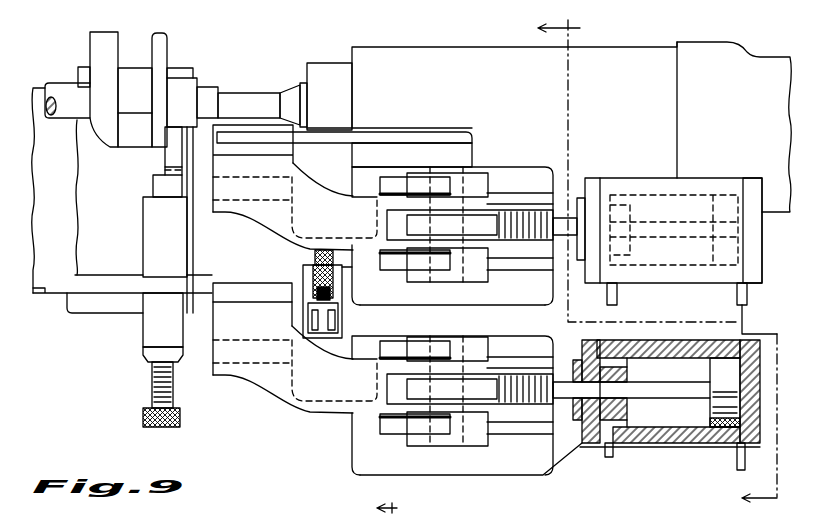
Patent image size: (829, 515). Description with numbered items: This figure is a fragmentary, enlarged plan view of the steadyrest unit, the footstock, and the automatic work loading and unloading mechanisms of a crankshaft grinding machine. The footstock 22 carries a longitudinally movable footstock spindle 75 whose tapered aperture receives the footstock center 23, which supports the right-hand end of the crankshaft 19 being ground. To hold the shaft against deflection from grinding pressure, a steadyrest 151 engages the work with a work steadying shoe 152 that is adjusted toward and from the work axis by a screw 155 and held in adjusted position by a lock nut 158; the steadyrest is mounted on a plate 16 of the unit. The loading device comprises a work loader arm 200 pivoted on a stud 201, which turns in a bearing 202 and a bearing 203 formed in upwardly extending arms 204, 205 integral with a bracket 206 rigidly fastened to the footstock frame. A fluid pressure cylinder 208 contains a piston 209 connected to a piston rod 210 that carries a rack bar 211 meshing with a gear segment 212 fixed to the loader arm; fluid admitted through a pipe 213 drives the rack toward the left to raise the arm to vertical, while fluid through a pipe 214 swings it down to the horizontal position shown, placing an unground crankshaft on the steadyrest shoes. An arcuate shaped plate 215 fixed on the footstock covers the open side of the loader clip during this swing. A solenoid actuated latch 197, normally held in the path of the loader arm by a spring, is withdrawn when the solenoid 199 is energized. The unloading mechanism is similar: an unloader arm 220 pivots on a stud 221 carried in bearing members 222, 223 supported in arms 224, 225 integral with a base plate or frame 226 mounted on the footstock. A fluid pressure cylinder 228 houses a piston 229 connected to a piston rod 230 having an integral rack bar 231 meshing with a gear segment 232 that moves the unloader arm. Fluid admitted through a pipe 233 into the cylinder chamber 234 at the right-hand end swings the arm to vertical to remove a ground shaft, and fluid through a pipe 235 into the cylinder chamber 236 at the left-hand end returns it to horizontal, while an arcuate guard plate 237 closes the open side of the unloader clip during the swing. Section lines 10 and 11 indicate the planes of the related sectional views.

The crankshaft 19 is at (80, 46).
The mounting plate 16 is at (43, 293).
The work steadying shoe 152 is at (173, 145).
The steadyrest 151 is at (150, 257).
The lock nut 158 is at (147, 356).
The screw 155 is at (152, 385).
The footstock center 23 is at (292, 97).
The footstock spindle 75 is at (325, 70).
The footstock 22 is at (423, 58).
The arcuate shaped plate 215 is at (365, 135).
The bearing 202 is at (420, 183).
The stud 201 is at (472, 167).
The upwardly extending arm 204 is at (500, 190).
The rack bar 211 is at (545, 212).
The gear segment 212 is at (495, 227).
The piston rod 210 is at (637, 222).
The fluid pressure cylinder 208 is at (667, 187).
The piston 209 is at (723, 202).
The pipe 214 is at (617, 298).
The pipe 213 is at (747, 298).
The bearing 203 is at (422, 258).
The upwardly extending arm 205 is at (500, 267).
The bracket 206 is at (497, 293).
The work loader arm 200 is at (262, 228).
The guard plate 237 is at (220, 283).
The solenoid actuated latch 197 is at (310, 268).
The solenoid 199 is at (325, 338).
The unloader arm 220 is at (255, 387).
The bearing member 222 is at (422, 337).
The arm 224 is at (482, 340).
The gear segment 232 is at (495, 390).
The bearing member 223 is at (410, 422).
The arm 225 is at (497, 427).
The base plate or frame 226 is at (492, 457).
The stud 221 is at (418, 420).
The rack bar 231 is at (550, 403).
The pipe 235 is at (605, 457).
The piston rod 230 is at (637, 393).
The fluid pressure cylinder 228 is at (668, 445).
The piston 229 is at (718, 430).
The cylinder chamber 236 is at (682, 420).
The pipe 233 is at (743, 462).
The cylinder chamber 234 is at (760, 393).
The section line 10- 10 is at (661, 262).
The section line 11- 11 is at (401, 505).